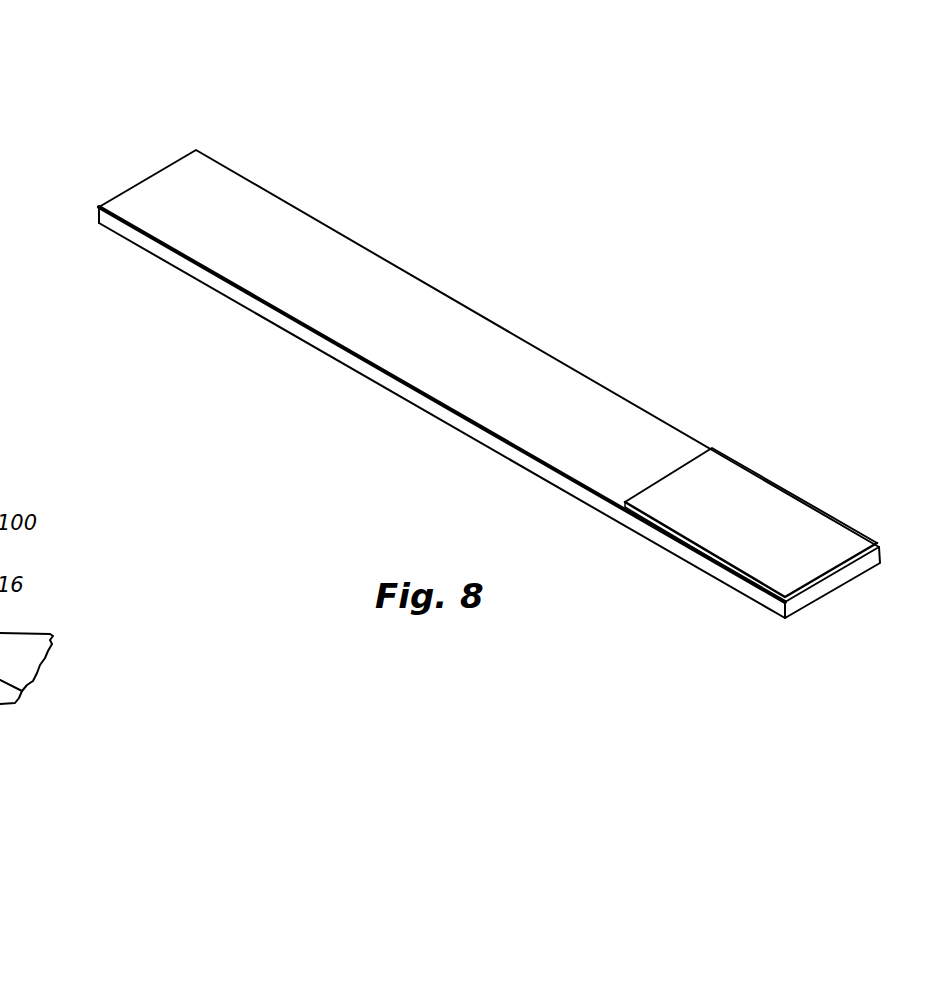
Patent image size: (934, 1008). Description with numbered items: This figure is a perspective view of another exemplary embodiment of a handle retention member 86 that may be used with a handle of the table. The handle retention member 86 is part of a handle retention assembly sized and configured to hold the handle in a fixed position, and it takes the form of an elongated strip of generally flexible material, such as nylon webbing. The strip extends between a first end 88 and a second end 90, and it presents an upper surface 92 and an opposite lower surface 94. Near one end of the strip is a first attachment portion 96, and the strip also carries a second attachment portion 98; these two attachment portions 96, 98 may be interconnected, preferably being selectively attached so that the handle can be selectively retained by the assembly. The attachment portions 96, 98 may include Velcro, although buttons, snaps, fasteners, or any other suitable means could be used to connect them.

The handle retention member 86 is at (587, 308).
The first end 88 is at (142, 181).
The second end 90 is at (830, 593).
The upper surface 92 is at (360, 277).
The lower surface 94 is at (310, 345).
The first attachment portion 96 is at (778, 498).
The second attachment portion 98 is at (148, 252).